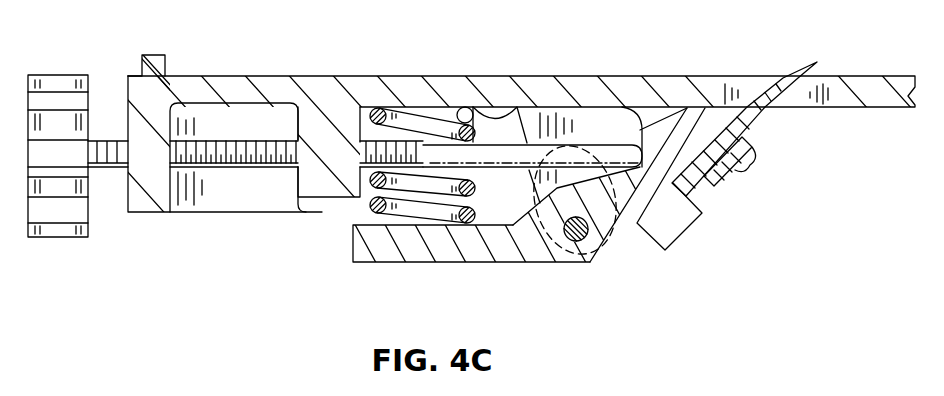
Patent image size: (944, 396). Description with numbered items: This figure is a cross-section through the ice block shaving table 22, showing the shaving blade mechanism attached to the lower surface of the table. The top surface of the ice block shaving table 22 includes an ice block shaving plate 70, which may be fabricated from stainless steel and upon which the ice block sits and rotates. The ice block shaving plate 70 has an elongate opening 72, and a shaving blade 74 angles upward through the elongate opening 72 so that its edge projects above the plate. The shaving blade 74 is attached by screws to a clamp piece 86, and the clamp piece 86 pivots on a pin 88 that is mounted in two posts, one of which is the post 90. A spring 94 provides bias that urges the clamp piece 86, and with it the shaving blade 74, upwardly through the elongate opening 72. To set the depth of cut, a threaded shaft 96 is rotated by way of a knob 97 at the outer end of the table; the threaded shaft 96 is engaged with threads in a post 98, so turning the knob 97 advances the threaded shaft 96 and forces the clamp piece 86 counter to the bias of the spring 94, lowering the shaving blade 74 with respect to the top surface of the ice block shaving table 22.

The ice block shaving table 22 is at (140, 72).
The ice block shaving plate 70 is at (625, 75).
The elongate opening 72 is at (798, 108).
The shaving blade 74 is at (790, 77).
The clamp piece 86 is at (687, 224).
The pin 88 is at (571, 240).
The post 90 is at (537, 120).
The spring 94 is at (363, 203).
The threaded shaft 96 is at (267, 173).
The knob 97 is at (60, 240).
The post 98 is at (322, 212).